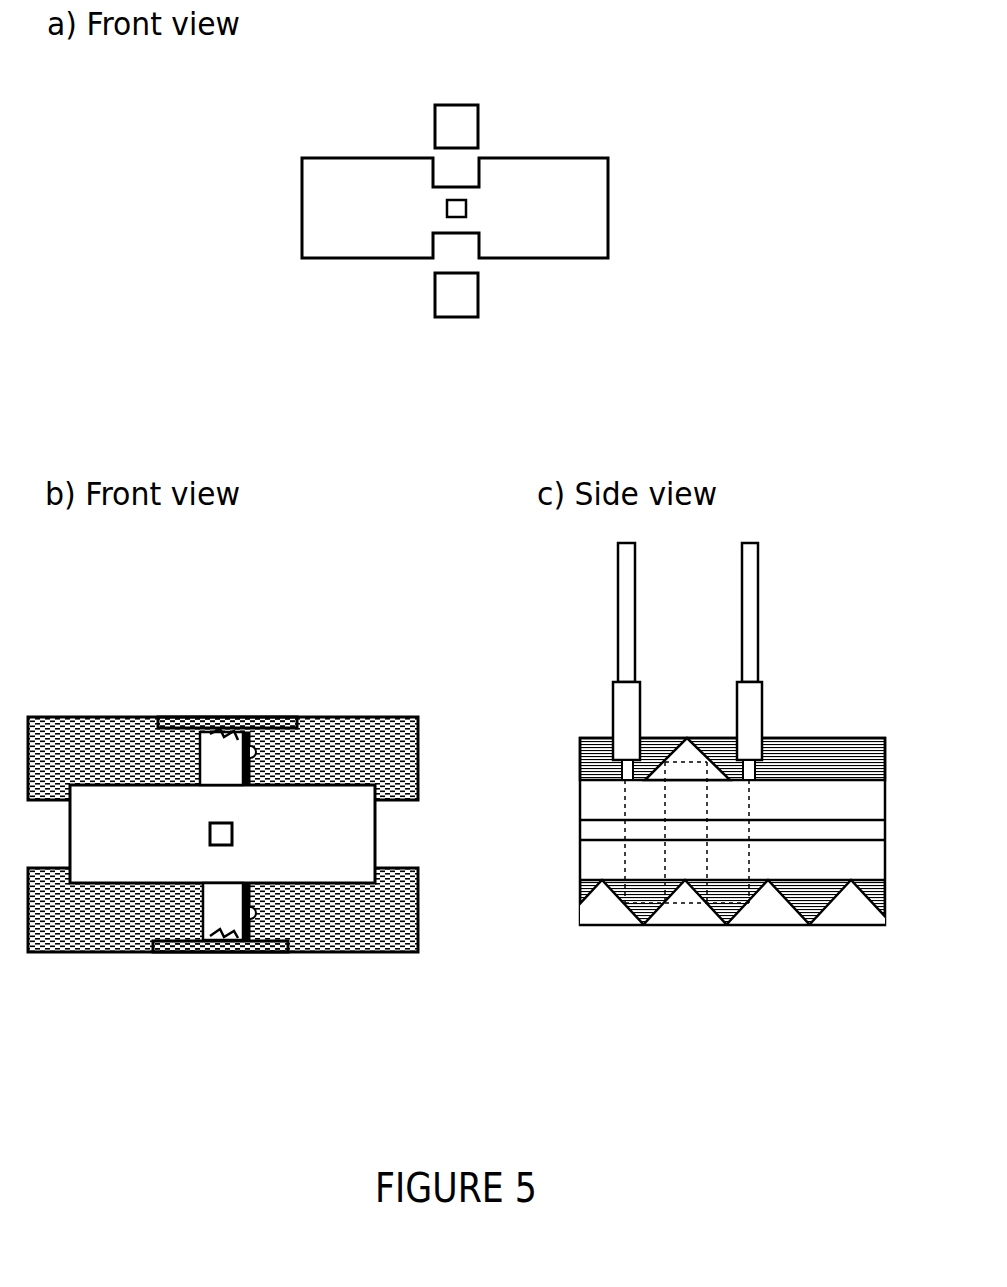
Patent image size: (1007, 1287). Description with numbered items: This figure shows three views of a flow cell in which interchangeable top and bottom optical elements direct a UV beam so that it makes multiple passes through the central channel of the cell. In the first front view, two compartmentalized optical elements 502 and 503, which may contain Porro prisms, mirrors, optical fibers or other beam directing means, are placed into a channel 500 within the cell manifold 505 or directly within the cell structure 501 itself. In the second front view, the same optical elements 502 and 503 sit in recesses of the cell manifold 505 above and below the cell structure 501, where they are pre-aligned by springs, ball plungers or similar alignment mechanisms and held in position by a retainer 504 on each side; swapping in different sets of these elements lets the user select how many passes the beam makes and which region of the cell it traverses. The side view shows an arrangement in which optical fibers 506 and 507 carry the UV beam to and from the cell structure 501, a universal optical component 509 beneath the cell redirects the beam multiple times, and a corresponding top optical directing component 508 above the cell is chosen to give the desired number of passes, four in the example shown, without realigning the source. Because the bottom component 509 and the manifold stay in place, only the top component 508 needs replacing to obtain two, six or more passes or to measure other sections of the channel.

The channel 500 is at (447, 167).
The cell structure 501 is at (375, 178).
The interchangeable optical element 502 is at (457, 298).
The interchangeable optical element 503 is at (458, 128).
The retainer 504 is at (250, 712).
The cell manifold 505 is at (385, 768).
The optical fiber 506 is at (625, 657).
The optical fiber 507 is at (750, 662).
The top optical directing component 508 is at (790, 728).
The universal optical component 509 is at (665, 932).